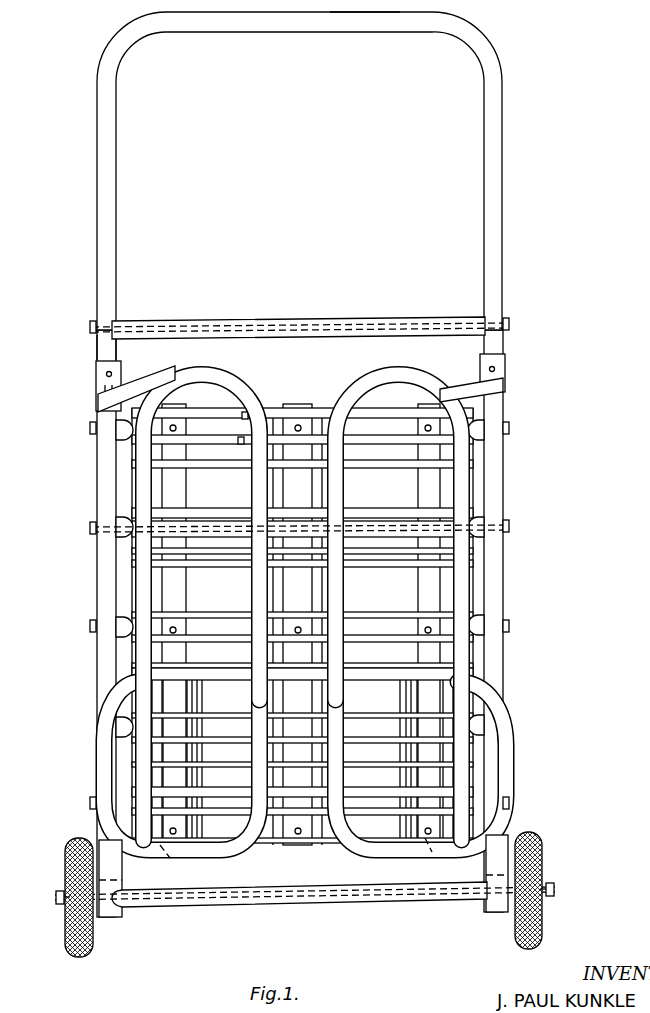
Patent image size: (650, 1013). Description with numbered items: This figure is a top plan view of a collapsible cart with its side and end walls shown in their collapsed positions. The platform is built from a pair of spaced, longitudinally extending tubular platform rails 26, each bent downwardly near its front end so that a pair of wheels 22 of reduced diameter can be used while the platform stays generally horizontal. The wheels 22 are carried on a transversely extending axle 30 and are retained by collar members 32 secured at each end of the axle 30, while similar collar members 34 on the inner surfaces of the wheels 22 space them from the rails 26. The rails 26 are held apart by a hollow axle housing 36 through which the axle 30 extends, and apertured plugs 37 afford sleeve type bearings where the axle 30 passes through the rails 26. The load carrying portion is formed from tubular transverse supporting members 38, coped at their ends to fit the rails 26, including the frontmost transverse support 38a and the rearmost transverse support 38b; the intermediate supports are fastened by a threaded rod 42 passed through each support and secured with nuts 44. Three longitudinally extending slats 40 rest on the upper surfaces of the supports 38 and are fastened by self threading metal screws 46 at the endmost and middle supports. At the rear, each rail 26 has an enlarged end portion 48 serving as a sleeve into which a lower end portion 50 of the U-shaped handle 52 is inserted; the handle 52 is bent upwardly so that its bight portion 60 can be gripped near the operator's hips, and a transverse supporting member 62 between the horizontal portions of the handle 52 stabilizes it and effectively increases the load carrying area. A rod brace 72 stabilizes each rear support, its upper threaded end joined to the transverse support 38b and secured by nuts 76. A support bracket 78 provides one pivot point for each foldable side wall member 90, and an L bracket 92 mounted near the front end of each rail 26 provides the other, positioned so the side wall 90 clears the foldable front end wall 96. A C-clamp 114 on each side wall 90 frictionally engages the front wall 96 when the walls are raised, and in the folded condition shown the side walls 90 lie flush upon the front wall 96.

The wheels 22 is at (65, 934).
The platform rails 26 is at (100, 660).
The axle 30 is at (545, 894).
The collar members 32 is at (56, 892).
The collar members 34 is at (102, 915).
The axle housing 36 is at (238, 906).
The apertured plugs 37 is at (120, 915).
The transverse supporting members 38 is at (115, 627).
The frontmost transverse support 38a is at (275, 843).
The rearmost transverse support 38b is at (303, 412).
The slats 40 is at (173, 490).
The threaded rod 42 is at (355, 323).
The nuts 44 is at (509, 325).
The self threading metal screws 46 is at (170, 430).
The enlarged end portion 48 is at (96, 380).
The lower end portions 50 is at (97, 347).
The handle 52 is at (223, 35).
The bight portion 60 is at (350, 22).
The transverse supporting member 62 is at (226, 318).
The rod brace 72 is at (103, 406).
The nuts 76 is at (247, 413).
The support bracket 78 is at (507, 381).
The foldable side wall members 90 is at (255, 585).
The L bracket 92 is at (100, 824).
The foldable front end wall 96 is at (320, 665).
The C-clamp 114 is at (170, 846).